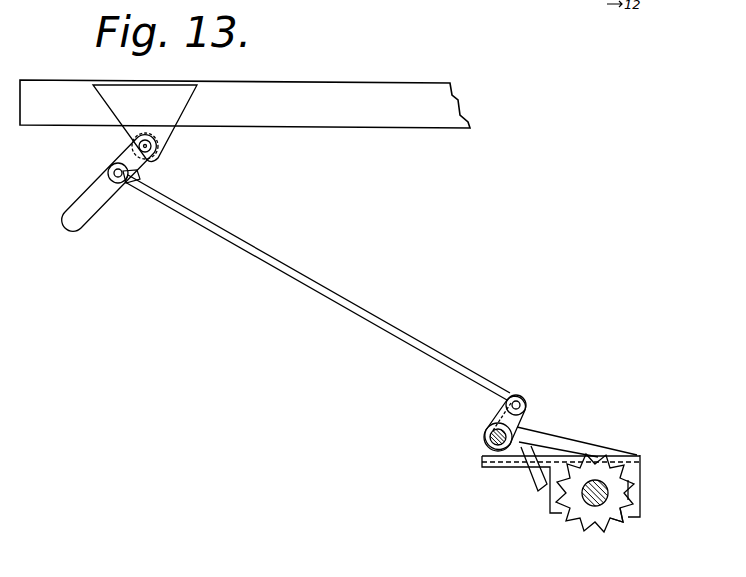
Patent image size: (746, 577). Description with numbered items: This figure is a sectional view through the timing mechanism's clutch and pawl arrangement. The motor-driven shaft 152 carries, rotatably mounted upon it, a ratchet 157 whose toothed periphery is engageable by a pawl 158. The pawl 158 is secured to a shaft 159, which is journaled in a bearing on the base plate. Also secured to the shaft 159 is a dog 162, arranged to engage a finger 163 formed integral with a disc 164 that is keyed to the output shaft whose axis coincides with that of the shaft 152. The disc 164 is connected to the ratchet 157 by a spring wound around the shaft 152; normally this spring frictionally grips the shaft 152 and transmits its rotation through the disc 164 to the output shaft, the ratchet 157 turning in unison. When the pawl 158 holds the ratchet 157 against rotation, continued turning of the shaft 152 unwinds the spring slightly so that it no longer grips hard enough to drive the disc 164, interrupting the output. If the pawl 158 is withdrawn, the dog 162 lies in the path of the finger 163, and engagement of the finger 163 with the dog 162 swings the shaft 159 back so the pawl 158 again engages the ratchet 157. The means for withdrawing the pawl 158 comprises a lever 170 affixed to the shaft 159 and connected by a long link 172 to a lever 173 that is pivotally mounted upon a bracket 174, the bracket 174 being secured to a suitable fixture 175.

The fixture 175 is at (245, 92).
The bracket 174 is at (122, 105).
The lever 173 is at (97, 200).
The link 172 is at (268, 258).
The lever 170 is at (530, 419).
The shaft 159 is at (472, 435).
The pawl 158 is at (570, 452).
The dog 162 is at (525, 472).
The finger 163 is at (548, 489).
The shaft 152 is at (588, 498).
The ratchet 157 is at (617, 487).
The disc 164 is at (618, 522).